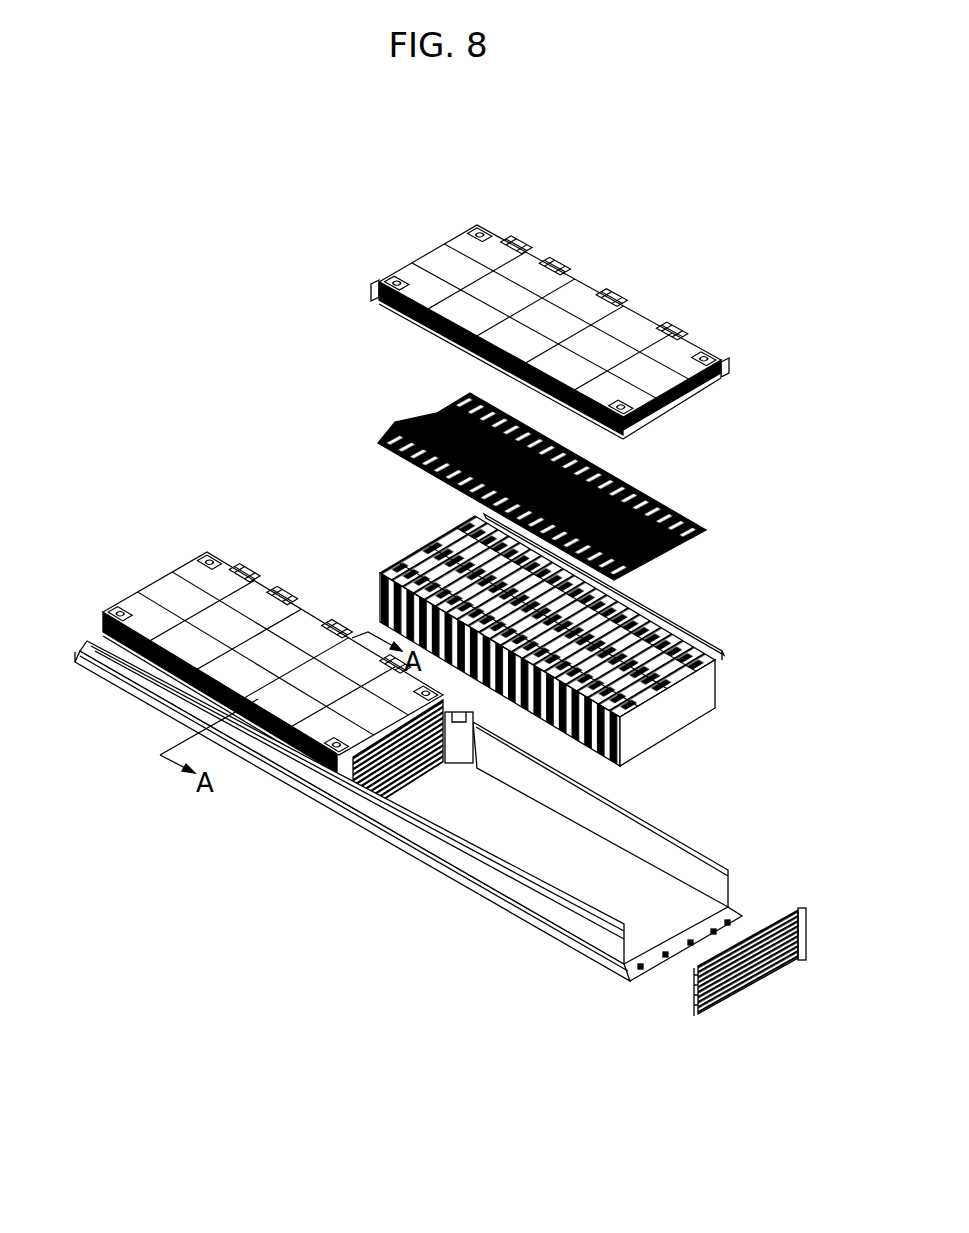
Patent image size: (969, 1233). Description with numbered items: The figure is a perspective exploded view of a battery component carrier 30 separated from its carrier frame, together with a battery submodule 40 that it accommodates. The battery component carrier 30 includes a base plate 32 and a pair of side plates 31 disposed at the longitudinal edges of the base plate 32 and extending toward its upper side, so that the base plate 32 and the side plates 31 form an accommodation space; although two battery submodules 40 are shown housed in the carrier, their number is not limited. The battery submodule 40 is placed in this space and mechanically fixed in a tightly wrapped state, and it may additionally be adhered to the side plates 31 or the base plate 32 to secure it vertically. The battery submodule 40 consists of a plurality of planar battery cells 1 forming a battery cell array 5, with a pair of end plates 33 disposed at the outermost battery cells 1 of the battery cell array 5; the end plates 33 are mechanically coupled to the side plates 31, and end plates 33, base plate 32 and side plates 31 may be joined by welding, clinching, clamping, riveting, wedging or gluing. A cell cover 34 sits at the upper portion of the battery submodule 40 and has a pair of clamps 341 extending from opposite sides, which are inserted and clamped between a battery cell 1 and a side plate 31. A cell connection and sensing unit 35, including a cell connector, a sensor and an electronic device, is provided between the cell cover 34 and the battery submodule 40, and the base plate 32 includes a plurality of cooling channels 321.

The battery cell 1 is at (720, 655).
The battery cell array 5 is at (641, 608).
The battery component carrier 30 is at (432, 787).
The side plate 31 is at (698, 878).
The base plate 32 is at (408, 861).
The cooling channel 321 is at (720, 940).
The end plate 33 is at (432, 793).
The cell cover 34 is at (554, 328).
The clamp 341 is at (385, 316).
The cell connection and sensing unit 35 is at (711, 510).
The battery submodule 40 is at (96, 624).